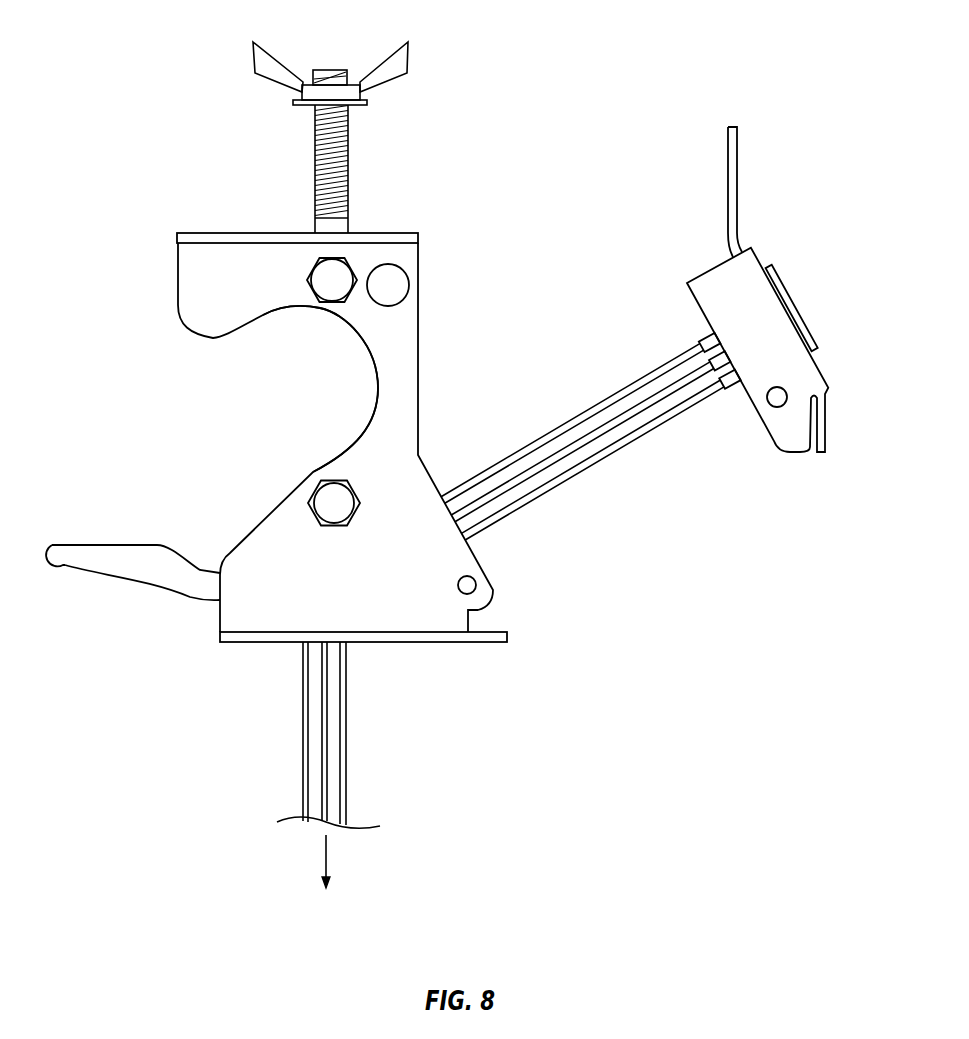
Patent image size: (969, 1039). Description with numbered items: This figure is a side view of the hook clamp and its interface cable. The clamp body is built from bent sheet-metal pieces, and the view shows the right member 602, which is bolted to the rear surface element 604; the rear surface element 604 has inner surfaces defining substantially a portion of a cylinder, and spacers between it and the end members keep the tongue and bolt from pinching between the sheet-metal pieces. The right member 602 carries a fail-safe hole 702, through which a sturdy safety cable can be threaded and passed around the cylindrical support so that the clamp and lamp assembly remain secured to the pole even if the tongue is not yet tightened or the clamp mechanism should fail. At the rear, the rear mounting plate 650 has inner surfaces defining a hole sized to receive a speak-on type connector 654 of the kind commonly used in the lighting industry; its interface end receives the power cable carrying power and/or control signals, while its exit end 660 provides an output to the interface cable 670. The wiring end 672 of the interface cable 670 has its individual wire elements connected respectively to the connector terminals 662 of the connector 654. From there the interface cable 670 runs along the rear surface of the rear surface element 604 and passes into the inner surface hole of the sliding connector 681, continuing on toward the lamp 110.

The right member 602 is at (453, 558).
The rear surface element 604 is at (362, 396).
The fail-safe hole 702 is at (395, 287).
The sliding connector 681 is at (355, 658).
The interface cable 670 is at (598, 457).
The wiring end 672 is at (592, 412).
The rear mounting plate 650 is at (823, 413).
The speak-on type connector 654 is at (780, 280).
The exit end 660 is at (704, 339).
The connector terminals 662 is at (731, 380).
The lamp 110 is at (348, 943).